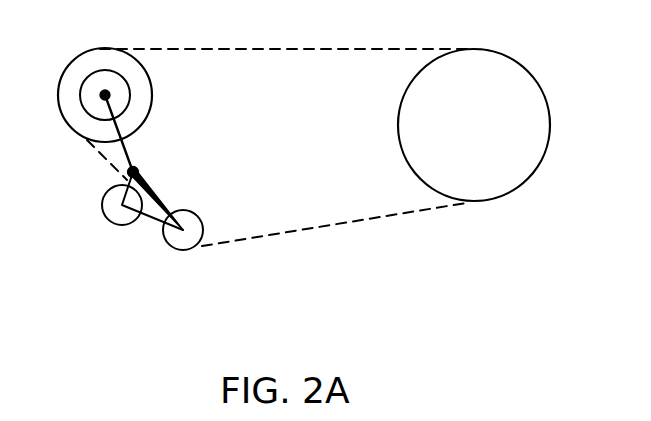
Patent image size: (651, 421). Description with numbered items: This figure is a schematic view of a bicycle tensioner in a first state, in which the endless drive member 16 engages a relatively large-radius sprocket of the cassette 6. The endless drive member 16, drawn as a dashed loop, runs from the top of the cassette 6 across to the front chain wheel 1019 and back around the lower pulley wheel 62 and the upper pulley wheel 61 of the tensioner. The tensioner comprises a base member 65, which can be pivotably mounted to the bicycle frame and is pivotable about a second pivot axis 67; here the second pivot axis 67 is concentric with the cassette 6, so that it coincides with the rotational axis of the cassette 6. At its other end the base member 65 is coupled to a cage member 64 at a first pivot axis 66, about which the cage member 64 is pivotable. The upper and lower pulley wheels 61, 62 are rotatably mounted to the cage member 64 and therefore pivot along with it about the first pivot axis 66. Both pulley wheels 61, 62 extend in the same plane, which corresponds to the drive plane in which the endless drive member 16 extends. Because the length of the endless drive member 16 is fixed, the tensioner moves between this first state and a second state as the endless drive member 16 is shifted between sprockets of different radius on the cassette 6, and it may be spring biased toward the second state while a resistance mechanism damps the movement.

The cassette 6 is at (72, 75).
The second pivot axis 67 is at (110, 94).
The base member 65 is at (126, 146).
The first pivot axis 66 is at (141, 172).
The cage member 64 is at (159, 203).
The upper pulley wheel 61 is at (102, 212).
The lower pulley wheel 62 is at (173, 240).
The front chain wheel 1019 is at (512, 68).
The endless drive member 16 is at (420, 208).